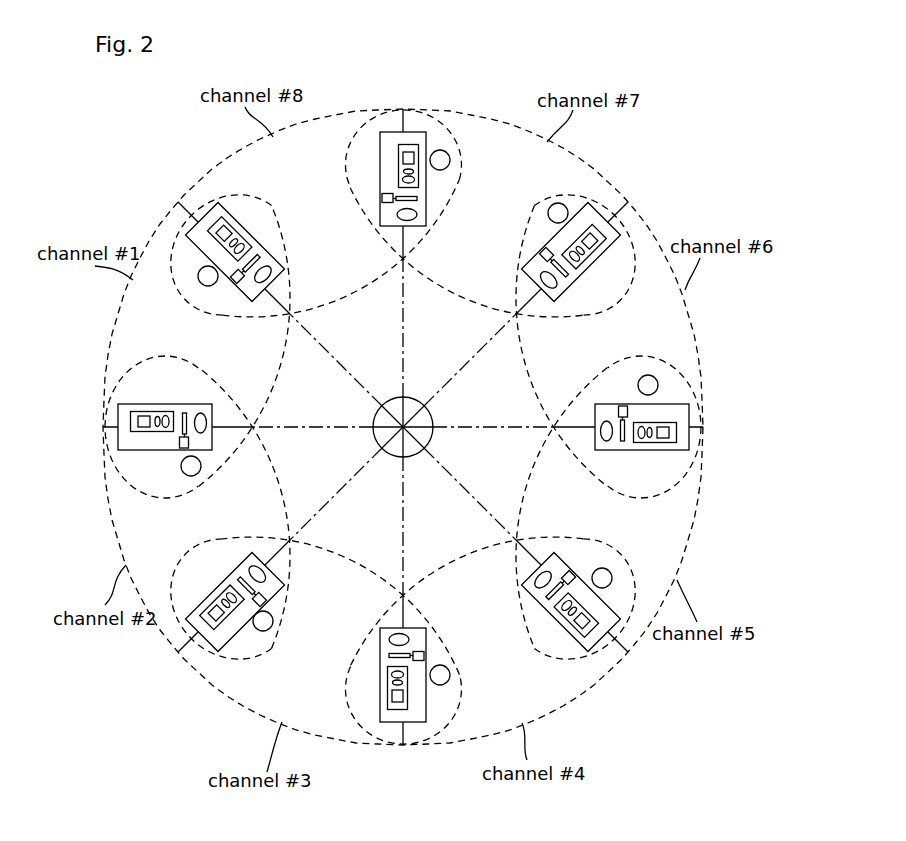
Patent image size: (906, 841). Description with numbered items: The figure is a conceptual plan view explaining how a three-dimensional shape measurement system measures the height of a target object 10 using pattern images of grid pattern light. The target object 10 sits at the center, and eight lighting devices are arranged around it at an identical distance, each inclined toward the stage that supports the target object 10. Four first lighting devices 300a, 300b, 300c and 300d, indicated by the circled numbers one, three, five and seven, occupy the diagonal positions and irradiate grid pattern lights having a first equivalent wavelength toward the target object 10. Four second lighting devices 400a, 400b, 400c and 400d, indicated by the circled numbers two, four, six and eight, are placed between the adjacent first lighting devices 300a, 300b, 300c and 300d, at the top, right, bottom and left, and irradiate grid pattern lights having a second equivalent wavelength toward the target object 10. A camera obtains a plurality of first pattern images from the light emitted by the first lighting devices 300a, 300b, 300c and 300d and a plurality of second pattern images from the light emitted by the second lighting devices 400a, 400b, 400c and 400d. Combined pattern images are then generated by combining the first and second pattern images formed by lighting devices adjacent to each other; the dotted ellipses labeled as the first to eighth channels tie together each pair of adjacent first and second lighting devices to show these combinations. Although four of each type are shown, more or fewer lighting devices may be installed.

The target object 10 is at (430, 411).
The first lighting device 300a is at (195, 208).
The first lighting device 300b is at (192, 650).
The first lighting device 300c is at (617, 648).
The first lighting device 300d is at (608, 212).
The second lighting device 400a is at (104, 427).
The second lighting device 400b is at (403, 745).
The second lighting device 400c is at (701, 427).
The second lighting device 400d is at (403, 108).